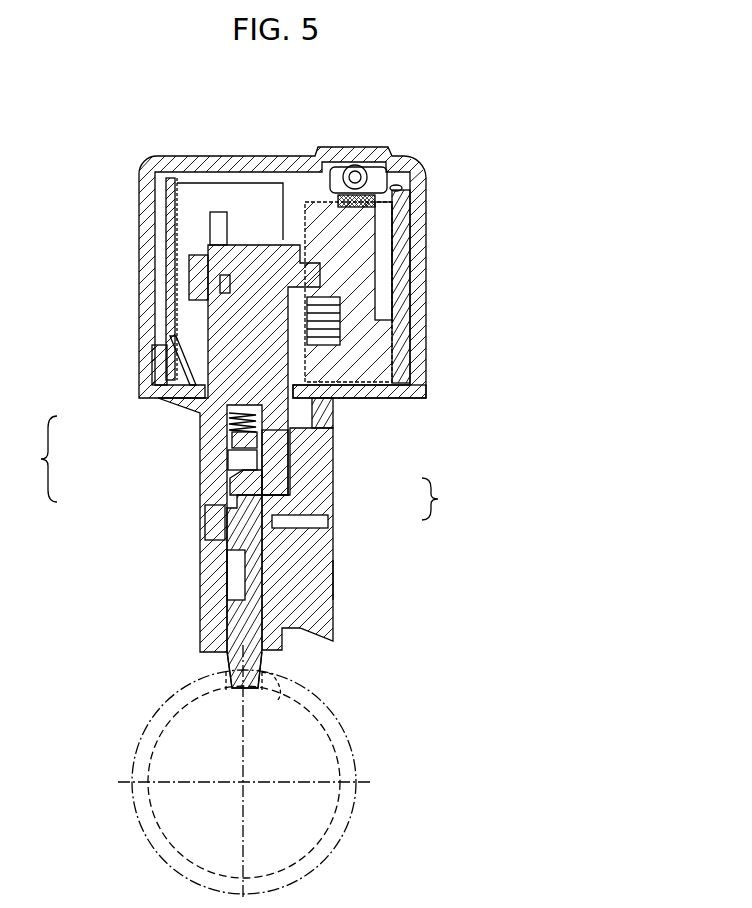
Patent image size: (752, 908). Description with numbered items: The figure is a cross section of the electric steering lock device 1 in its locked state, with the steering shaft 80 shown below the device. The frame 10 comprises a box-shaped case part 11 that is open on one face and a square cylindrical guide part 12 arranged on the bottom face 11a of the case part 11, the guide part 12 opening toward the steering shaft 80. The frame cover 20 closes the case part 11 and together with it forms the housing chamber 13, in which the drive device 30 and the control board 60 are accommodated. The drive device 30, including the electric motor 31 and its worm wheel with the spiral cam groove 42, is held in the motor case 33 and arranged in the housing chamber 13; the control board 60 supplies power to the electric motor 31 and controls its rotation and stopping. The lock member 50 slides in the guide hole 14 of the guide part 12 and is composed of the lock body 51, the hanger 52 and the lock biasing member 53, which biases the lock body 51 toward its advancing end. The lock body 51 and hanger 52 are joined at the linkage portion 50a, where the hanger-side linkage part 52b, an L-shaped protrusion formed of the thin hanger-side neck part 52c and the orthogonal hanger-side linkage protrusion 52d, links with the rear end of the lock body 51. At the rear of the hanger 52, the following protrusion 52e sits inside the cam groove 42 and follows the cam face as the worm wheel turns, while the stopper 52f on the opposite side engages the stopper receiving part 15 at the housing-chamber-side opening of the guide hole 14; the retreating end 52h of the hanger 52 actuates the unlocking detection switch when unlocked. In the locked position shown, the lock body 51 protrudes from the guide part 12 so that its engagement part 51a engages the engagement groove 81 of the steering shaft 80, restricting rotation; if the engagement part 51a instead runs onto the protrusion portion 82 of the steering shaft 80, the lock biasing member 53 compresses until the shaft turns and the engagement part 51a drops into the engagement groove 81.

The electric steering lock device 1 is at (517, 147).
The frame 10 is at (335, 558).
The case part 11 is at (410, 400).
The bottom face 11a is at (355, 405).
The guide part 12 is at (327, 452).
The housing chamber 13 is at (270, 216).
The guide hole 14 is at (227, 562).
The stopper receiving part 15 is at (225, 337).
The frame cover 20 is at (430, 281).
The drive device 30 is at (393, 249).
The electric motor 31 is at (317, 197).
The motor case 33 is at (400, 208).
The cam groove 42 is at (395, 300).
The lock member 50 is at (33, 459).
The linkage portion 50a is at (200, 470).
The lock body 51 is at (200, 517).
The engagement part 51a is at (230, 650).
The hanger 52 is at (185, 403).
The hanger-side linkage part 52b is at (452, 499).
The hanger-side neck part 52c is at (273, 442).
The hanger-side linkage protrusion 52d is at (240, 480).
The following protrusion 52e is at (372, 263).
The stopper 52f is at (200, 313).
The retreating end 52h is at (233, 228).
The lock biasing member 53 is at (205, 430).
The control board 60 is at (163, 203).
The steering shaft 80 is at (358, 815).
The engagement groove 81 is at (292, 698).
The protrusion portion 82 is at (178, 692).